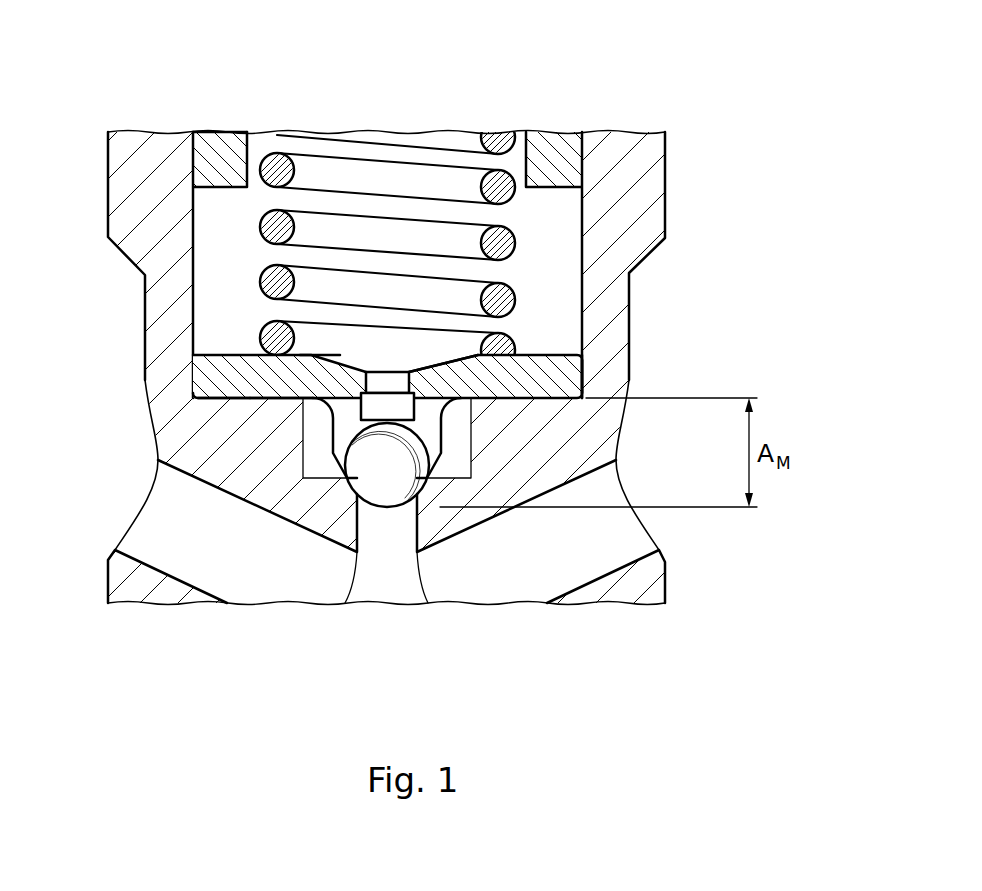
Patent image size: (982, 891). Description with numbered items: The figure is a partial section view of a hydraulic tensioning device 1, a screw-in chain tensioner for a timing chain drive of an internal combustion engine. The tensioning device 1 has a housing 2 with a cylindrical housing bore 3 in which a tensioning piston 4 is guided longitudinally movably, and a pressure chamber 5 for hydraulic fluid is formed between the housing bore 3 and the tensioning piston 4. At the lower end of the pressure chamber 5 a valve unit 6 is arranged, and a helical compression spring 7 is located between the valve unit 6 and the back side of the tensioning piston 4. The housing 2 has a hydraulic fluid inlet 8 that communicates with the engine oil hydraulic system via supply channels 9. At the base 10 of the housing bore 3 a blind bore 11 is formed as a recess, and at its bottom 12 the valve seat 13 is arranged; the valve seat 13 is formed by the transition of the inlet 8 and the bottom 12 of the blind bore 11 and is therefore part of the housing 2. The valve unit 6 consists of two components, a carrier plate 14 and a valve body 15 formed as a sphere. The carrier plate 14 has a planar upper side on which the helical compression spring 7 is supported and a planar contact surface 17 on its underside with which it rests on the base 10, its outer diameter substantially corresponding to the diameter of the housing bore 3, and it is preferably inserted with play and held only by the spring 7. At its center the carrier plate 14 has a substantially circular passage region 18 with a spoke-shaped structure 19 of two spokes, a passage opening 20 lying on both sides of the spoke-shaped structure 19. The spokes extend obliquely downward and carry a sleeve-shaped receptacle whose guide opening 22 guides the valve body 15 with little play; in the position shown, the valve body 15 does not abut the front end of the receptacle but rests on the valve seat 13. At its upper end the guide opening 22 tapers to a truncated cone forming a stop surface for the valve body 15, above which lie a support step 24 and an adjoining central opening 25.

The tensioning device 1 is at (680, 64).
The housing 2 is at (652, 158).
The housing bore 3 is at (581, 207).
The tensioning piston 4 is at (222, 140).
The pressure chamber 5 is at (222, 272).
The valve unit 6 is at (596, 377).
The helical compression spring 7 is at (508, 244).
The hydraulic fluid inlet 8 is at (400, 523).
The supply channels 9 is at (152, 513).
The base 10 is at (233, 384).
The blind bore 11 is at (458, 462).
The bottom 12 is at (320, 468).
The valve seat 13 is at (430, 508).
The carrier plate 14 is at (580, 338).
The valve body 15 is at (377, 492).
The contact surface 17 is at (220, 413).
The passage region 18 is at (343, 348).
The spoke-shaped structure 19 is at (522, 362).
The passage opening 20 is at (407, 362).
The guide opening 22 is at (333, 462).
The support step 24 is at (420, 416).
The central opening 25 is at (383, 372).